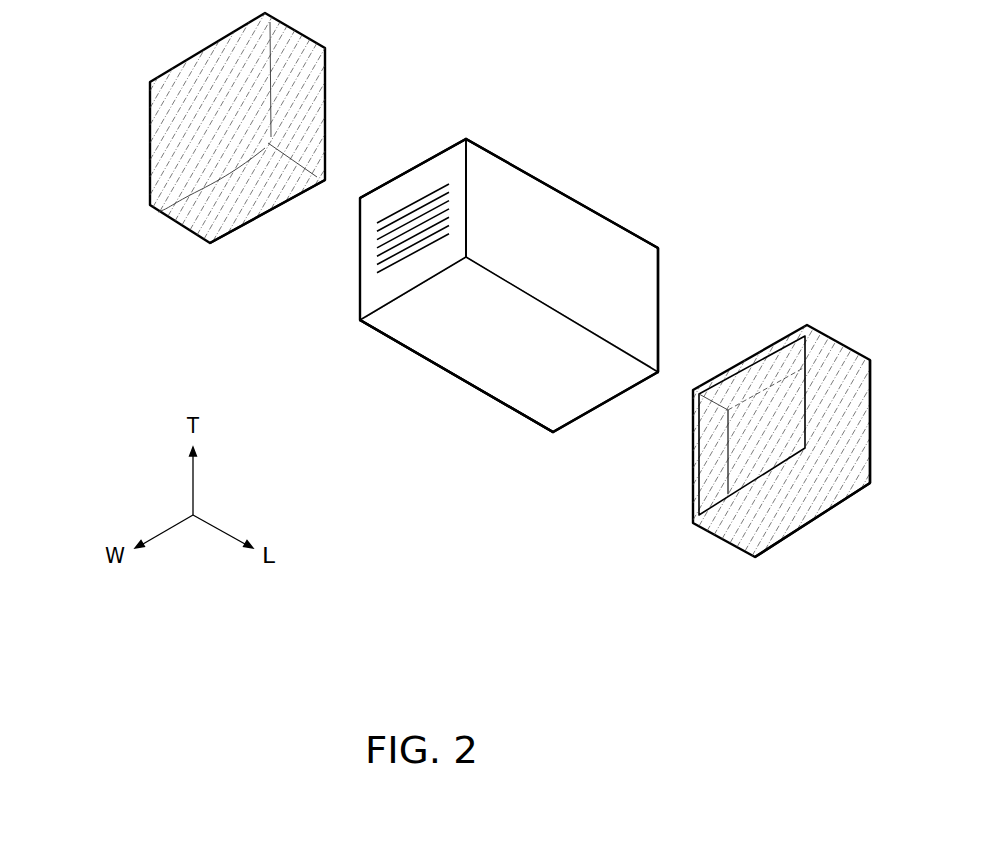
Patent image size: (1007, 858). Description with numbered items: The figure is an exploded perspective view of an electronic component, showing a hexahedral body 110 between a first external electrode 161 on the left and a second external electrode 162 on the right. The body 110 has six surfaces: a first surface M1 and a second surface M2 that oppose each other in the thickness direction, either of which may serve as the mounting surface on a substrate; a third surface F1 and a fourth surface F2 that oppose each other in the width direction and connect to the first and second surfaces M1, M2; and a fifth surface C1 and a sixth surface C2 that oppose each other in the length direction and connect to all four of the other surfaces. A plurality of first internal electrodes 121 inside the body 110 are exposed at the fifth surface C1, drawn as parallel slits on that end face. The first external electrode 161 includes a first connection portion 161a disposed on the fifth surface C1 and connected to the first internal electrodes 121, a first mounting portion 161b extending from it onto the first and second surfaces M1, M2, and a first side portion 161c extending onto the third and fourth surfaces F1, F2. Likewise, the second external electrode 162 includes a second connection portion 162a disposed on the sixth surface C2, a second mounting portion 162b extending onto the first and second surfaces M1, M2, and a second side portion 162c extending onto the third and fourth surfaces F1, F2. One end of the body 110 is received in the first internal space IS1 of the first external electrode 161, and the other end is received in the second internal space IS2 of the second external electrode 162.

The body 110 is at (562, 191).
The first internal electrodes 121 is at (433, 190).
The first external electrode 161 is at (72, 113).
The first connection portion 161a is at (155, 162).
The first mounting portion 161b is at (178, 210).
The first side portion 161c is at (287, 93).
The second external electrode 162 is at (848, 603).
The second connection portion 162a is at (762, 455).
The second mounting portion 162b is at (790, 520).
The second side portion 162c is at (845, 443).
The first internal space IS1 is at (276, 227).
The second internal space IS2 is at (723, 462).
The fifth surface C1 is at (382, 196).
The sixth surface C2 is at (669, 282).
The third surface F1 is at (600, 244).
The fourth surface F2 is at (400, 355).
The first surface M1 is at (513, 380).
The second surface M2 is at (505, 147).